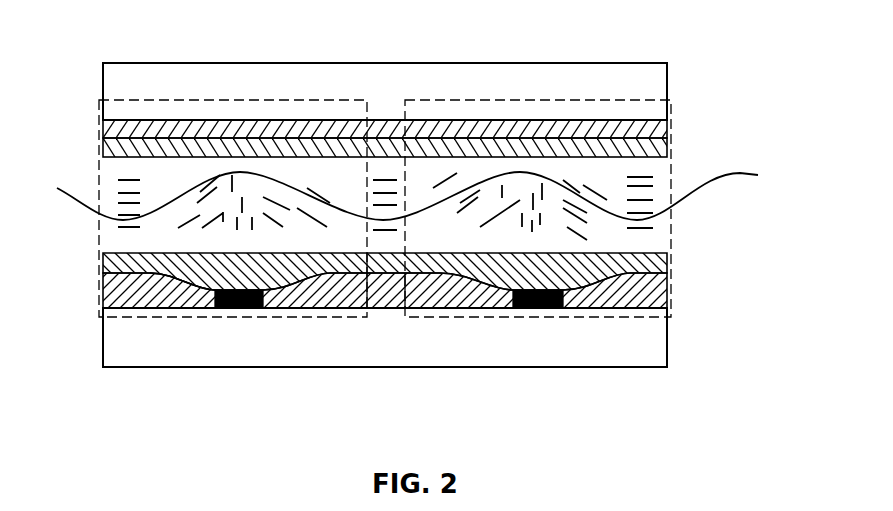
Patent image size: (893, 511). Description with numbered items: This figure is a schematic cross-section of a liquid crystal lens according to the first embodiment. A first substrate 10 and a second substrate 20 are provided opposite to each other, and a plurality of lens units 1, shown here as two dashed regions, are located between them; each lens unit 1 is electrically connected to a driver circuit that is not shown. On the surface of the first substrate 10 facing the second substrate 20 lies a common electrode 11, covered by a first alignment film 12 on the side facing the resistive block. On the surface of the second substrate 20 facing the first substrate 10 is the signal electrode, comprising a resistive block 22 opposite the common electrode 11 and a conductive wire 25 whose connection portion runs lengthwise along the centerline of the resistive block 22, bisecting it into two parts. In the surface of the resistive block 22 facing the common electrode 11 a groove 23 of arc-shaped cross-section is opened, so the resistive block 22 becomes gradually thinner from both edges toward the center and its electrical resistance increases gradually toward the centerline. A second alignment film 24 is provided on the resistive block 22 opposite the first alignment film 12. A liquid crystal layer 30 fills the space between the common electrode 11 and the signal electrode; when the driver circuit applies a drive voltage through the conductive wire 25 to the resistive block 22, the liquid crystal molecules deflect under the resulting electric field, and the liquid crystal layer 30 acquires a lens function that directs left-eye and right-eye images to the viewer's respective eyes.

The lens unit 1 is at (241, 99).
The first substrate 10 is at (645, 87).
The common electrode 11 is at (648, 127).
The first alignment film 12 is at (648, 150).
The second substrate 20 is at (657, 337).
The resistive block 22 is at (657, 297).
The groove 23 is at (193, 284).
The second alignment film 24 is at (670, 258).
The conductive wire 25 is at (547, 308).
The liquid crystal layer 30 is at (602, 221).